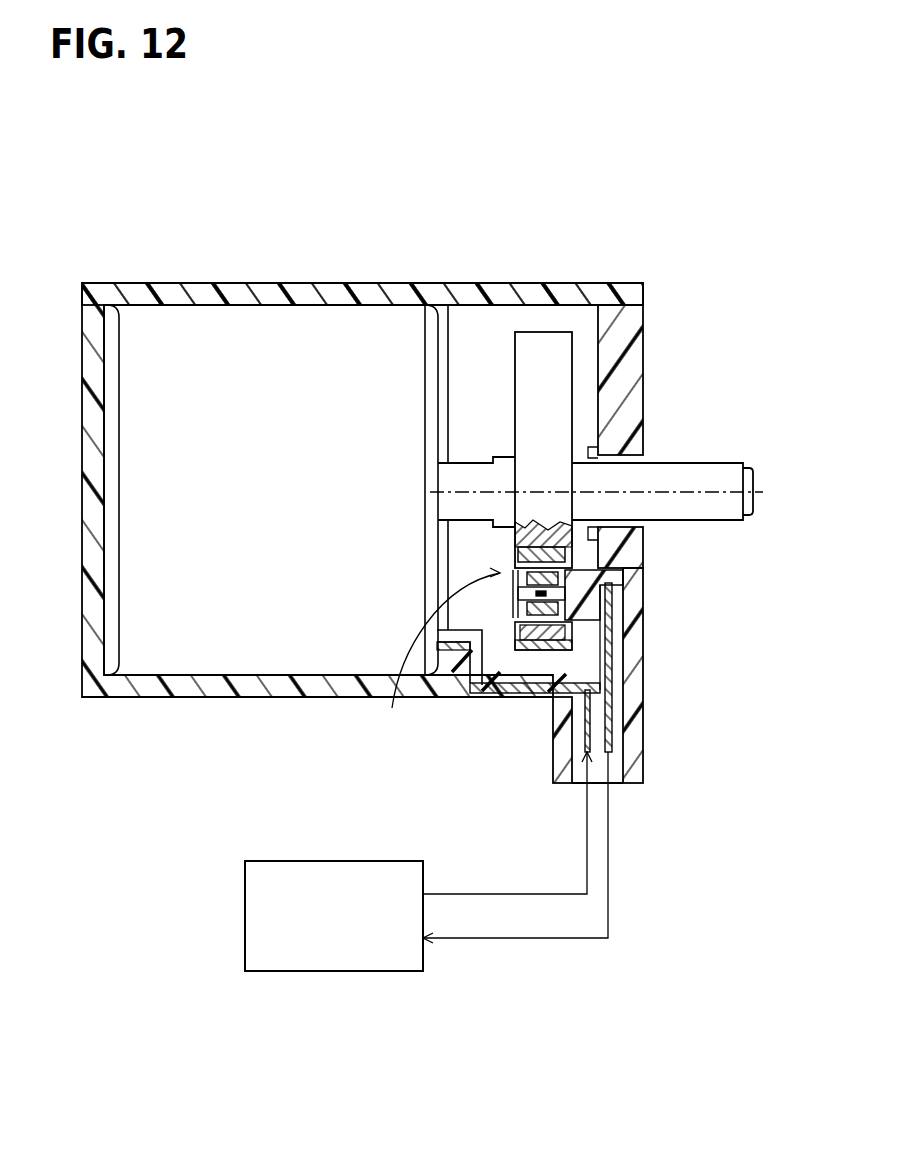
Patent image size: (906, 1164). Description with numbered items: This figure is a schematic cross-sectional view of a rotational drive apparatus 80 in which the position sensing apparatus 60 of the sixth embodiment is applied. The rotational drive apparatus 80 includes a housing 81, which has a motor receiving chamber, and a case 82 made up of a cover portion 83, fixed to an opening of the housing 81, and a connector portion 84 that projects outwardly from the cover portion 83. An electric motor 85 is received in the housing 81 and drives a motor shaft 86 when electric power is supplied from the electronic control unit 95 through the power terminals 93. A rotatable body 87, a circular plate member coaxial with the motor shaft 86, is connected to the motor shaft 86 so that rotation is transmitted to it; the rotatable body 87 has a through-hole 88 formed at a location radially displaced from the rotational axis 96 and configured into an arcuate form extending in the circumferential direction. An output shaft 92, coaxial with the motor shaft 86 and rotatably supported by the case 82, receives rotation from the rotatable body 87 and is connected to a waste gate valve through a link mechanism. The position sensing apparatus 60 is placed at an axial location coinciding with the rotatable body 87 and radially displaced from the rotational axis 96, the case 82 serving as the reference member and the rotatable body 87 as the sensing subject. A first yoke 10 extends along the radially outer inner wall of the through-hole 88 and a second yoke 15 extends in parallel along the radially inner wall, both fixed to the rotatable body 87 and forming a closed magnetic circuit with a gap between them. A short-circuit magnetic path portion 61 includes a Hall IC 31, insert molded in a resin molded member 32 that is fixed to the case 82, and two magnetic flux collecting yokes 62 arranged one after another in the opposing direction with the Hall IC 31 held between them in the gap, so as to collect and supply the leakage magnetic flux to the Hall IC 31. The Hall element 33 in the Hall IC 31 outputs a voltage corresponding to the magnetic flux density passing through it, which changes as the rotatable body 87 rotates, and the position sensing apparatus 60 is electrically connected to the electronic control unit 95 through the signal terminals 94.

The rotational drive apparatus 80 is at (113, 266).
The housing 81 is at (270, 295).
The case 82 is at (582, 290).
The cover portion 83 is at (640, 398).
The connector portion 84 is at (637, 762).
The electric motor 85 is at (366, 340).
The motor shaft 86 is at (465, 470).
The rotatable body 87 is at (541, 335).
The output shaft 92 is at (710, 475).
The rotational axis 96 is at (760, 492).
The second yoke 15 is at (570, 553).
The Hall IC 31 is at (625, 580).
The molded member 32 is at (567, 597).
The Hall element 33 is at (575, 613).
The first yoke 10 is at (572, 637).
The position sensing apparatus 60 is at (553, 641).
The short-circuit magnetic path portion 61 is at (440, 650).
The magnetic flux collecting yokes 62 is at (495, 579).
The through-hole 88 is at (508, 688).
The power terminals 93 is at (590, 730).
The signal terminals 94 is at (613, 712).
The electronic control unit 95 is at (268, 860).